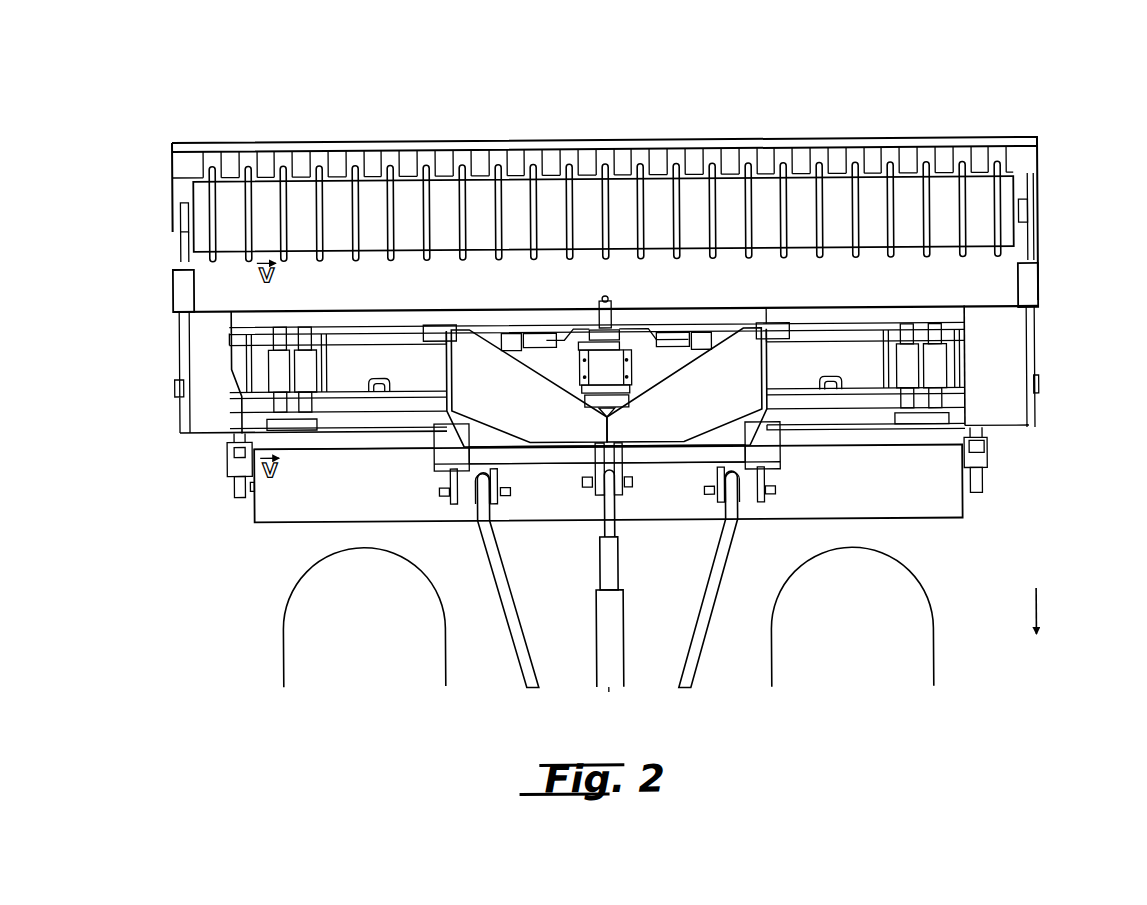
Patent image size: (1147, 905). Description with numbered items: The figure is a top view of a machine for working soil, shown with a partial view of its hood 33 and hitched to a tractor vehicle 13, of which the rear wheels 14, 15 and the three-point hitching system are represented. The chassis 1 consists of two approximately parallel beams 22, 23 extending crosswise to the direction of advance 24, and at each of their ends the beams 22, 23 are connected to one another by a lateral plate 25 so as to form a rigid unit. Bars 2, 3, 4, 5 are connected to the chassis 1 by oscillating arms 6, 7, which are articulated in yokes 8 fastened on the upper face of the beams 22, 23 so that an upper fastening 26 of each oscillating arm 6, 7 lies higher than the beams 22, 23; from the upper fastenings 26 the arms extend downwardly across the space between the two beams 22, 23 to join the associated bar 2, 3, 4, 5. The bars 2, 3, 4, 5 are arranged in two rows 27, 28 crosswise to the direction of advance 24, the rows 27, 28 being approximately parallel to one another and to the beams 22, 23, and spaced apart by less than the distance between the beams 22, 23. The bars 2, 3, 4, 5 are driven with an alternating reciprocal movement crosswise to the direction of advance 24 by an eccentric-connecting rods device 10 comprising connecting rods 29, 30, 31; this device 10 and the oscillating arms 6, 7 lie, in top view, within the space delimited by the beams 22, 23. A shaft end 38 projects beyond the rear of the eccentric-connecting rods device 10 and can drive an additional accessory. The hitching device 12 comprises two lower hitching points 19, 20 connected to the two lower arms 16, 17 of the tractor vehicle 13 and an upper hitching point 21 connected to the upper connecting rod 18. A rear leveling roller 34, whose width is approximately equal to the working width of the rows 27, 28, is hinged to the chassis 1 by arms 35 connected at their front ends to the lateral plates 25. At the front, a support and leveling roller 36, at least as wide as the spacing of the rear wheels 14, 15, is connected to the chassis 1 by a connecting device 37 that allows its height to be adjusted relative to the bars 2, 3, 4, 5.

The chassis 1 is at (980, 320).
The bar 2 is at (398, 406).
The bar 3 is at (793, 401).
The bar 4 is at (390, 330).
The bar 5 is at (785, 338).
The oscillating arm 6 is at (247, 345).
The oscillating arm 7 is at (336, 326).
The yoke 8 is at (505, 323).
The eccentric-connecting rods device 10 is at (616, 326).
The hitching device 12 is at (653, 427).
The tractor vehicle 13 is at (602, 708).
The rear wheel 14 is at (364, 617).
The rear wheel 15 is at (852, 617).
The lower arm 16 is at (510, 626).
The lower arm 17 is at (702, 626).
The upper connecting rod 18 is at (606, 624).
The lower hitching point 19 is at (467, 497).
The lower hitching point 20 is at (749, 498).
The upper hitching point 21 is at (623, 494).
The beam 22 is at (802, 423).
The beam 23 is at (818, 330).
The direction of advance 24 is at (1037, 636).
The lateral plate 25 is at (182, 416).
The upper fastening 26 is at (308, 370).
The row 27 is at (374, 409).
The row 28 is at (330, 304).
The connecting rod 29 is at (576, 333).
The connecting rod 30 is at (624, 330).
The connecting rod 31 is at (575, 388).
The hood 33 is at (212, 354).
The rear leveling roller 34 is at (546, 206).
The arm 35 is at (188, 265).
The support and leveling roller 36 is at (272, 511).
The connecting device 37 is at (224, 468).
The shaft end 38 is at (606, 303).